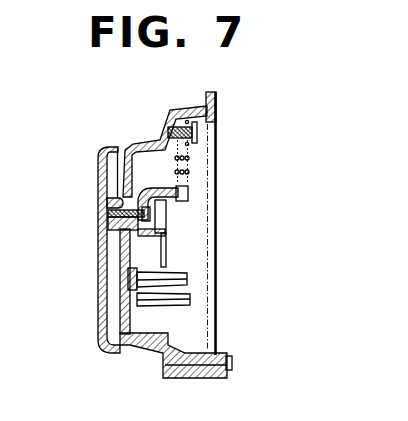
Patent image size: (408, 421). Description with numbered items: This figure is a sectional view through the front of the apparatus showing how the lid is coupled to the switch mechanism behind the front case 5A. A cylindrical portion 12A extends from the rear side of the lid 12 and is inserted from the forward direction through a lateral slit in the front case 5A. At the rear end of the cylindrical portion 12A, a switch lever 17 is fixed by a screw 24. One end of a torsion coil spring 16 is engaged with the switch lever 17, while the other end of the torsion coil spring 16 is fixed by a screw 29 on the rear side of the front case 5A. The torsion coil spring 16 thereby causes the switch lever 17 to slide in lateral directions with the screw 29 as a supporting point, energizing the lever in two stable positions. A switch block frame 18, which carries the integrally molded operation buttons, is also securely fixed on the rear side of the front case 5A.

The front case 5A is at (183, 112).
The lid 12 is at (97, 178).
The cylindrical portion 12A is at (107, 198).
The torsion coil spring 16 is at (190, 165).
The switch lever 17 is at (188, 195).
The switch block frame 18 is at (102, 320).
The screw 24 is at (150, 213).
The screw 29 is at (198, 135).